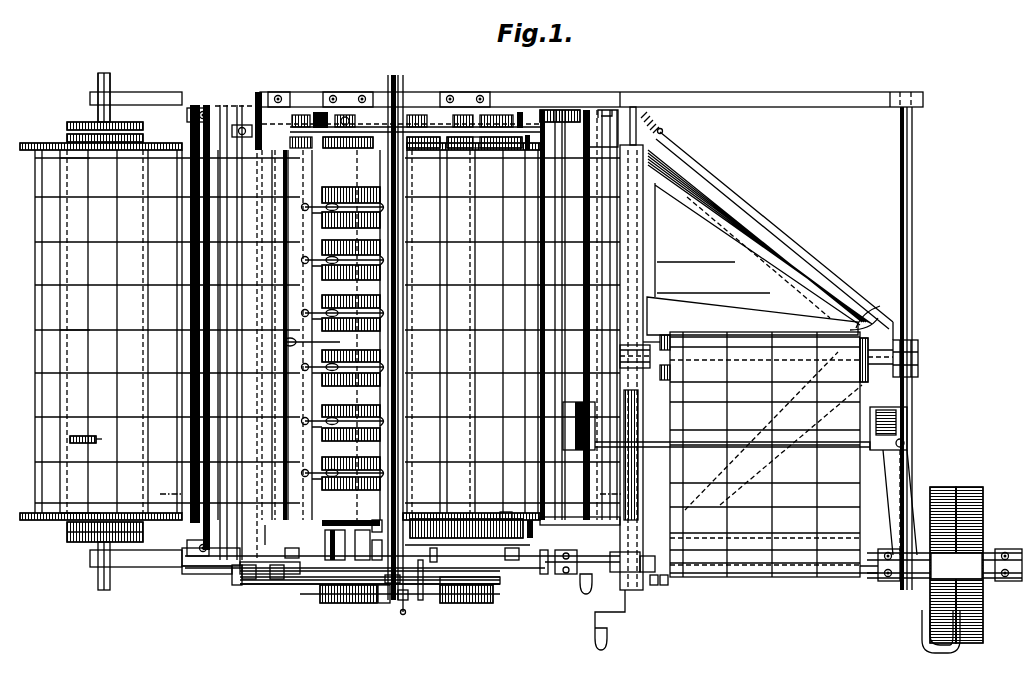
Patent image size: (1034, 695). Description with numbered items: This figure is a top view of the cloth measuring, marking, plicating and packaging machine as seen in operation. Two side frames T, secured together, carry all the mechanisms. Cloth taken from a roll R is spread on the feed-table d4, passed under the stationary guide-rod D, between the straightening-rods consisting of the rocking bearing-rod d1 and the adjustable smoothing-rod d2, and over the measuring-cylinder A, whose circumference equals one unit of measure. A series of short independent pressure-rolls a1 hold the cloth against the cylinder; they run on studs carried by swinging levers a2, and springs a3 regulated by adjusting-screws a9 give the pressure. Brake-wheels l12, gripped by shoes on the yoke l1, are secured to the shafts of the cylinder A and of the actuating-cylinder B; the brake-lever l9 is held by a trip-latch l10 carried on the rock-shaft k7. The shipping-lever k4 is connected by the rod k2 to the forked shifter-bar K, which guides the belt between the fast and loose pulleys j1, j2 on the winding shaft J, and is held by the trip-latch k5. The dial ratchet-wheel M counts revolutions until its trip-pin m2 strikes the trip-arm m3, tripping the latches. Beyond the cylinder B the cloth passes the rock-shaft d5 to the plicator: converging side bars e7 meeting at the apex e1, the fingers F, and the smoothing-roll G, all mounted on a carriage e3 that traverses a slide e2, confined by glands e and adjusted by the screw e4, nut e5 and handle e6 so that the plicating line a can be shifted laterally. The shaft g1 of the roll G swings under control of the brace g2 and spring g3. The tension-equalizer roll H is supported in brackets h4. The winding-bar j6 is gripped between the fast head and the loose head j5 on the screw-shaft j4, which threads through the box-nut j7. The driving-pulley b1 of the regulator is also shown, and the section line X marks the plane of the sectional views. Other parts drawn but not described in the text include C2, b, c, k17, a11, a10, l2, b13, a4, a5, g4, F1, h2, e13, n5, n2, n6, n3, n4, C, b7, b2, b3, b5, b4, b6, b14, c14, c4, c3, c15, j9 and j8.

The side frames T is at (506, 332).
The gear wheel C2 is at (67, 126).
The roll R is at (48, 316).
The plicating line a is at (457, 422).
The drum bar b is at (371, 339).
The drum end plate c is at (381, 503).
The stop pin k17 is at (86, 432).
The section line X is at (390, 494).
The stationary guide-rod D is at (223, 332).
The feed-table d4 is at (217, 330).
The adjustable smoothing-rod d2 is at (281, 339).
The connecting-rod k2 is at (217, 335).
The bearing-rod d1 is at (271, 530).
The yoke l1 is at (323, 115).
The measuring-cylinder A is at (331, 143).
The bracket a11 is at (320, 88).
The main shaft a10 is at (394, 335).
The gear l2 is at (471, 349).
The brake-wheels l12 is at (501, 110).
The gear b13 is at (423, 142).
The actuating-cylinder B is at (471, 327).
The pressure-rolls a1 is at (341, 335).
The swinging levers a2 is at (340, 331).
The spring a4 is at (310, 351).
The adjusting-screws a9 is at (386, 331).
The lever a5 is at (312, 337).
The rock-shaft d5 is at (574, 317).
The shipping-lever k4 is at (579, 449).
The tension-equalizer roll H is at (732, 438).
The glands e is at (628, 367).
The nut e5 is at (631, 373).
The slide e2 is at (620, 133).
The adjustable spring g3 is at (656, 122).
The pivot g4 is at (668, 128).
The brace g2 is at (774, 236).
The side bars e7 is at (760, 324).
The fingers F is at (752, 316).
The plate end F1 is at (869, 333).
The apex e1 is at (868, 317).
The smoothing-roll G is at (760, 363).
The shaft g1 is at (880, 370).
The carriage e3 is at (918, 349).
The spring box h2 is at (888, 434).
The brackets h4 is at (900, 502).
The collar e13 is at (635, 356).
The winding shaft J is at (930, 582).
The fast pulley j1 is at (943, 555).
The loose pulley j2 is at (956, 555).
The shifter-bar K is at (941, 640).
The gear n5 is at (466, 528).
The shaft n2 is at (500, 545).
The collar n6 is at (433, 555).
The block n3 is at (513, 549).
The block n4 is at (293, 546).
The block C is at (500, 510).
The bar b7 is at (530, 526).
The gear b2 is at (400, 601).
The driving-pulley b1 is at (466, 601).
The collar b3 is at (380, 601).
The pin b5 is at (399, 604).
The pin b4 is at (404, 615).
The rod b6 is at (427, 589).
The bar b14 is at (493, 590).
The rock-shaft k7 is at (391, 584).
The block c14 is at (329, 545).
The block c4 is at (356, 545).
The block c3 is at (382, 526).
The block c15 is at (384, 547).
The springs a3 is at (346, 523).
The dial ratchet-wheel M is at (275, 577).
The trip-arm m3 is at (257, 583).
The trip-pin m2 is at (282, 583).
The brake-lever l9 is at (370, 595).
The trip-latch k5 is at (212, 566).
The trip-latch l10 is at (207, 581).
The screw-shaft j4 is at (580, 552).
The winding-bar j6 is at (650, 551).
The loose revolving head j5 is at (616, 567).
The screw e4 is at (592, 581).
The pin j9 is at (653, 584).
The pin j8 is at (665, 584).
The box-nut j7 is at (545, 569).
The handle e6 is at (610, 620).